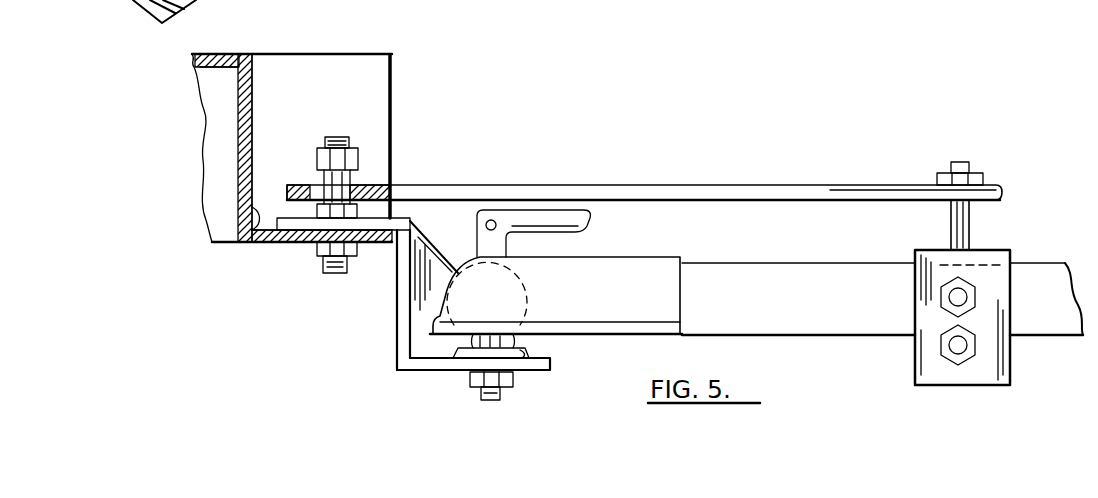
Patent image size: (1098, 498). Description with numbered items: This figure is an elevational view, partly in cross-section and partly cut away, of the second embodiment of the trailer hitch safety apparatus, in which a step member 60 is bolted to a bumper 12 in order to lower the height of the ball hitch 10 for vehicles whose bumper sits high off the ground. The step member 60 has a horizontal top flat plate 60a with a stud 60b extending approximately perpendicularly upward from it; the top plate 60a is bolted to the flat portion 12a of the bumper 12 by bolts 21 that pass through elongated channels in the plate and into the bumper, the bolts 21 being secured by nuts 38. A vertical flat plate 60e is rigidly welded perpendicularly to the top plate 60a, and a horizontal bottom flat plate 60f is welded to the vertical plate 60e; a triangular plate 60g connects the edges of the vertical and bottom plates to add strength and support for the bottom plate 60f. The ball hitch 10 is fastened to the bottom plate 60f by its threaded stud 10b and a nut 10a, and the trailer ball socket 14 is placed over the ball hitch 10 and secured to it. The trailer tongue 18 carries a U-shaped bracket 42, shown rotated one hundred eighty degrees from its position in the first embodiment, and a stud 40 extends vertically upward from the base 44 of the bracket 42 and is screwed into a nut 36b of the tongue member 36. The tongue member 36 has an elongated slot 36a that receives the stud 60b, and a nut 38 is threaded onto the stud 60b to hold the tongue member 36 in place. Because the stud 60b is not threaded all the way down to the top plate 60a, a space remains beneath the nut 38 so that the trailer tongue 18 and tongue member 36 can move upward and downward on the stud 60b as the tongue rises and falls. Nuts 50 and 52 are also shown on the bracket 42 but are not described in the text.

The ball hitch 10 is at (494, 343).
The nut 10a is at (468, 378).
The threaded stud 10b is at (502, 394).
The bumper 12 is at (243, 52).
The flat portion of bumper 12a is at (243, 204).
The trailer ball socket 14 is at (446, 281).
The trailer tongue 18 is at (737, 277).
The bolts 21 is at (362, 212).
The tongue member 36 is at (683, 171).
The slot 36a is at (360, 186).
The nut 36b is at (968, 176).
The nut 38 is at (357, 151).
The stud 40 is at (966, 233).
The U-shaped bracket 42 is at (950, 325).
The base of bracket 44 is at (994, 264).
The lower nut 50 is at (957, 362).
The upper nut 52 is at (968, 298).
The step member 60 is at (447, 261).
The horizontal top flat plate 60a is at (278, 217).
The stud 60b is at (360, 163).
The vertical flat plate 60e is at (395, 333).
The horizontal bottom flat plate 60f is at (403, 372).
The triangular plate 60g is at (527, 347).